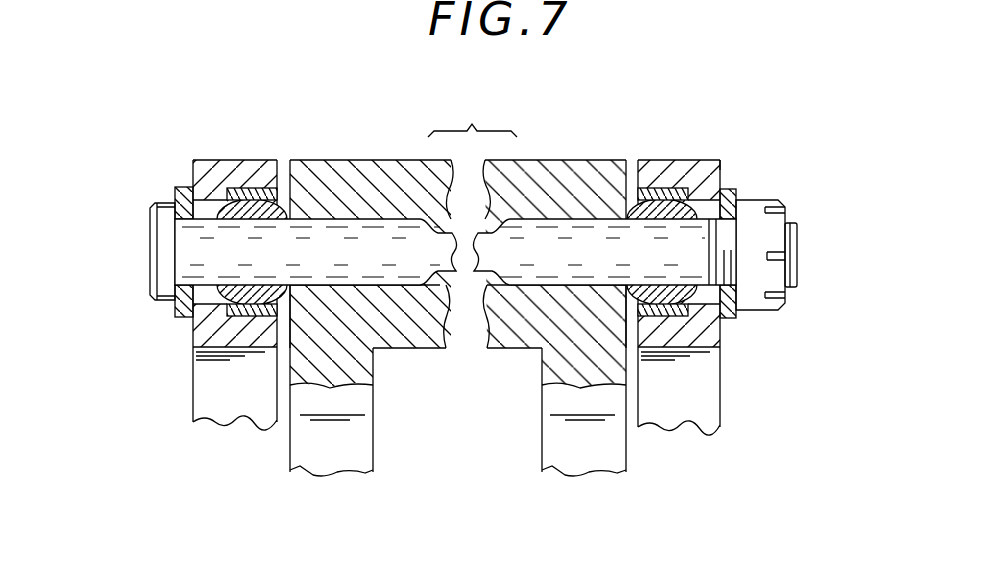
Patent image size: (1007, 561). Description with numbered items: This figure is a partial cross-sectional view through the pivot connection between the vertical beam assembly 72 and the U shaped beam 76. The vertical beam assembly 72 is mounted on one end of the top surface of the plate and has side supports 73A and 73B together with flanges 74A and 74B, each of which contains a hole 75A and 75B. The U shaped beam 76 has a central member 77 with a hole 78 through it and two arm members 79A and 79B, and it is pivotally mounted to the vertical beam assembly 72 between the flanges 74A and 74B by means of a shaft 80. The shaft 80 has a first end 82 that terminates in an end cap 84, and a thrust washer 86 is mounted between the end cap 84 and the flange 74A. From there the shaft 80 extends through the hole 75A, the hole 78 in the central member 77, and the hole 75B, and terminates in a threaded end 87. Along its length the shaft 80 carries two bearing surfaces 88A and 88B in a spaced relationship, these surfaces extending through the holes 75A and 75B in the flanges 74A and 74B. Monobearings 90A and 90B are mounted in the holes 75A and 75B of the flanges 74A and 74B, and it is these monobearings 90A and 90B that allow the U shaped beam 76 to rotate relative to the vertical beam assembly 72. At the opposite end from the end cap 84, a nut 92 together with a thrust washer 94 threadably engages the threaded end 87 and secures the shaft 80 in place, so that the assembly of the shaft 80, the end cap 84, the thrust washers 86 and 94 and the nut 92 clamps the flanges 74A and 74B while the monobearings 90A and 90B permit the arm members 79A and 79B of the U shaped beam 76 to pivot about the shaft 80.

The vertical beam assembly 72 is at (722, 168).
The side support 73A is at (193, 412).
The side support 73B is at (720, 412).
The flange 74A is at (203, 160).
The flange 74B is at (700, 160).
The hole 75A is at (280, 303).
The hole 75B is at (625, 303).
The U shaped beam 76 is at (394, 160).
The central member 77 is at (557, 160).
The hole 78 is at (345, 219).
The arm member 79A is at (313, 476).
The arm member 79B is at (605, 474).
The shaft 80 is at (472, 255).
The first end 82 is at (150, 283).
The end cap 84 is at (150, 235).
The thrust washer 86 is at (178, 186).
The threaded end 87 is at (798, 258).
The bearing surface 88A is at (385, 287).
The bearing surface 88B is at (533, 287).
The monobearing 90A is at (268, 160).
The monobearing 90B is at (660, 160).
The nut 92 is at (760, 200).
The thrust washer 94 is at (736, 316).